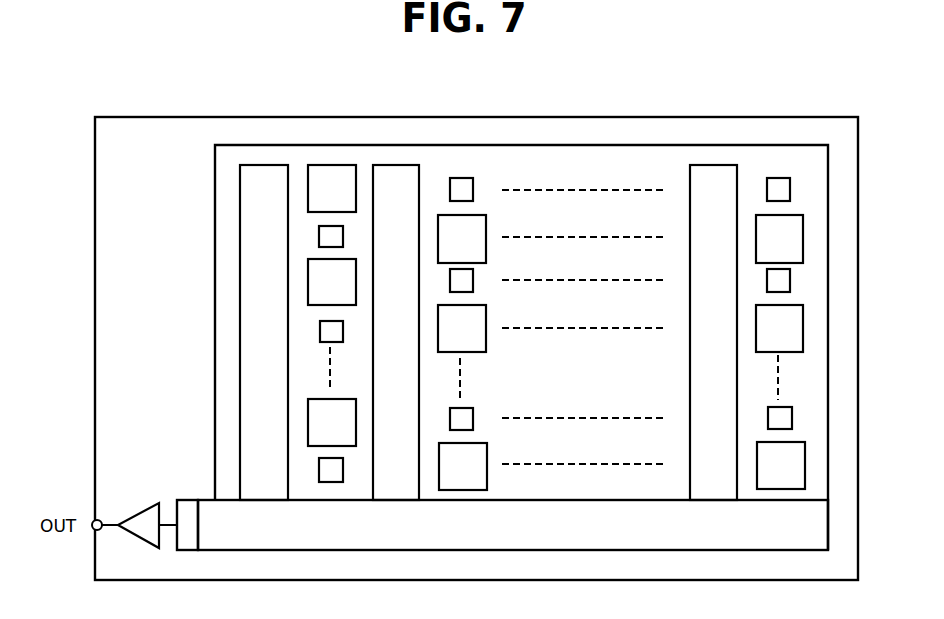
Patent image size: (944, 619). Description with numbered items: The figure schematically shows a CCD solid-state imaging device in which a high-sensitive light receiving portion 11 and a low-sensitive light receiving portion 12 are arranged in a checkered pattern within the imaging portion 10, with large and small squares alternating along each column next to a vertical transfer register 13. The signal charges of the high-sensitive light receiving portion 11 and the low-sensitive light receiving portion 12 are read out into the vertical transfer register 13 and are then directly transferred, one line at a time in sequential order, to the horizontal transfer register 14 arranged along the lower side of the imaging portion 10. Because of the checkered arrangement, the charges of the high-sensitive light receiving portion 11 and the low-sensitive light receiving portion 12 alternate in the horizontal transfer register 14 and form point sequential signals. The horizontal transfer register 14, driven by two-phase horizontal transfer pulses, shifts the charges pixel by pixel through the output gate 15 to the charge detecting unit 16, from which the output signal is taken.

The imaging portion 10 is at (216, 214).
The high-sensitive light receiving portion 11 is at (338, 172).
The low-sensitive light receiving portion 12 is at (473, 188).
The vertical transfer register 13 is at (243, 334).
The horizontal transfer register 14 is at (764, 532).
The output gate 15 is at (185, 542).
The charge detecting unit 16 is at (143, 522).